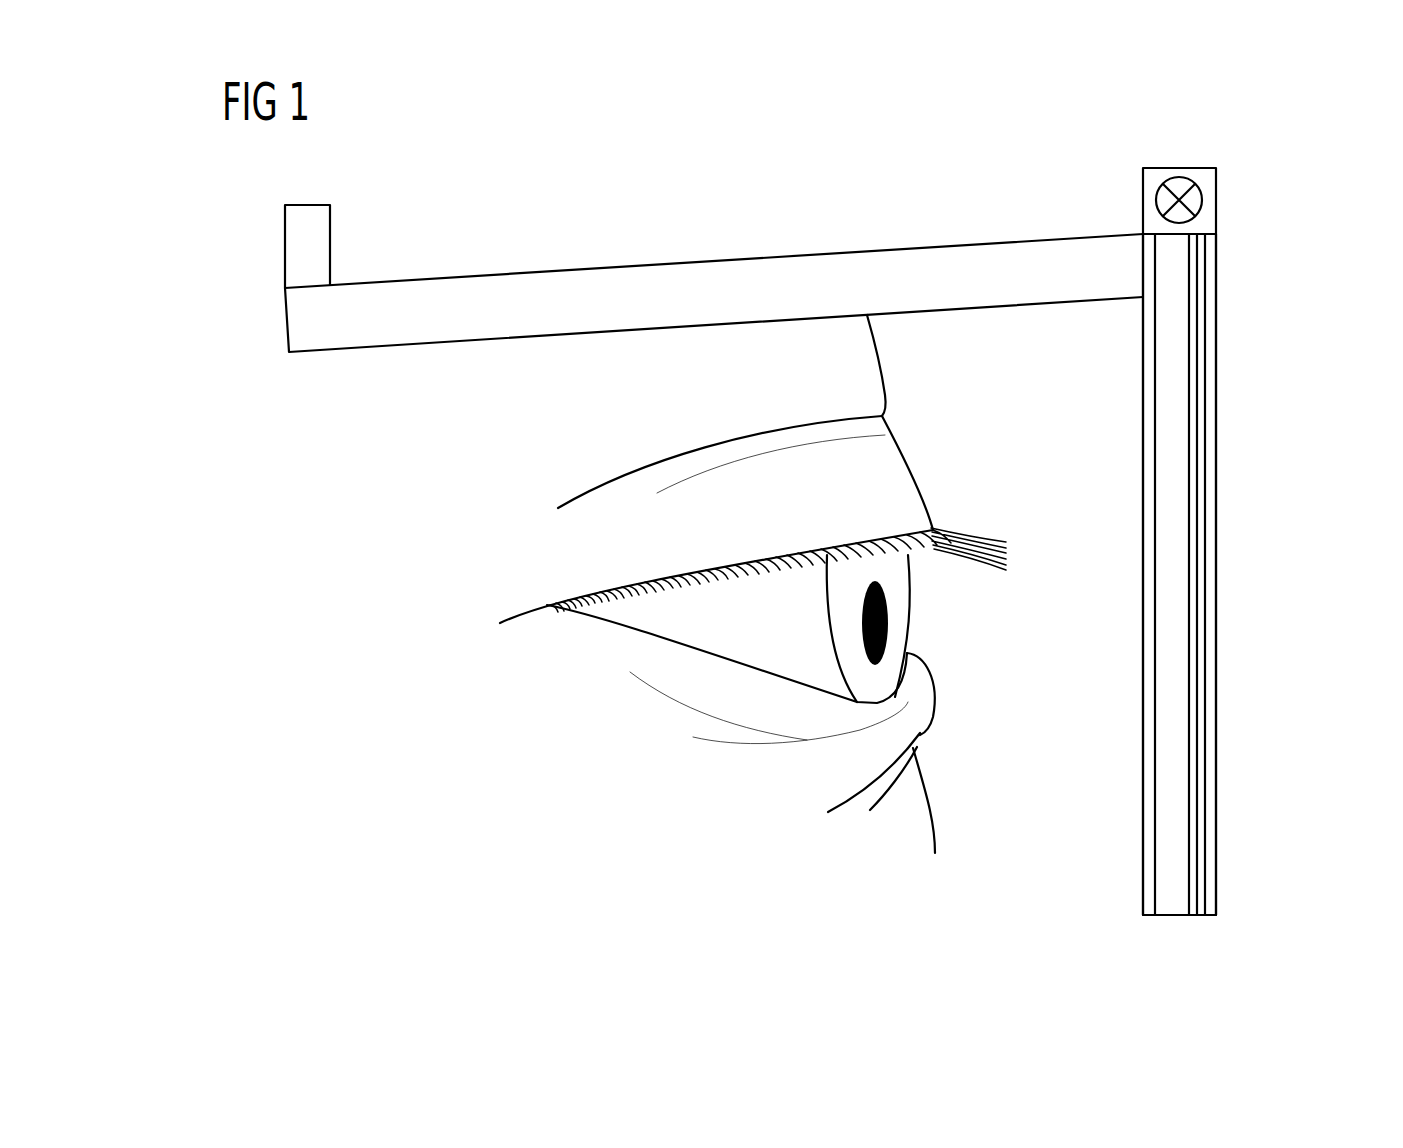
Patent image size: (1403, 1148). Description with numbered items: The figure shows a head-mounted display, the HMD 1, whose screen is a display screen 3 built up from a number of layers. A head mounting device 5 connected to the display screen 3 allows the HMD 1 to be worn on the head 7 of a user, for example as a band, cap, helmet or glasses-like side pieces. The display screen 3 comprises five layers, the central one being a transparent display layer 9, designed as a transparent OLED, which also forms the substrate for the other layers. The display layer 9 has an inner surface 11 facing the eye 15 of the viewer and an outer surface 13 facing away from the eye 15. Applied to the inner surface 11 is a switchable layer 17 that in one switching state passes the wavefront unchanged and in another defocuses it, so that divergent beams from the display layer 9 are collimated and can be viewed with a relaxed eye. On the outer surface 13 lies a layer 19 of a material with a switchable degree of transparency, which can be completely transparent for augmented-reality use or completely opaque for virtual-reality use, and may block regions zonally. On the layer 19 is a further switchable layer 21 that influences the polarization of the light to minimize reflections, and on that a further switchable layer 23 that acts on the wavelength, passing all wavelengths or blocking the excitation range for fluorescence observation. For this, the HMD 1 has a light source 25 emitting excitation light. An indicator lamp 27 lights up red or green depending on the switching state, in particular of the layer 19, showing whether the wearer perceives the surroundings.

The HMD 1 is at (828, 203).
The display screen 3 is at (1284, 522).
The head mounting device 5 is at (685, 277).
The head 7 is at (857, 352).
The transparent display layer 9 is at (1172, 785).
The inner surface 11 is at (1156, 662).
The outer surface 13 is at (1190, 595).
The eye 15 is at (900, 612).
The switchable layer 17 is at (1150, 740).
The layer of a material with a switchable degree of transparency 19 is at (1193, 452).
The further switchable layer 21 is at (1203, 375).
The further switchable layer 23 is at (1213, 323).
The light source 25 is at (1180, 168).
The indicator lamp 27 is at (296, 243).